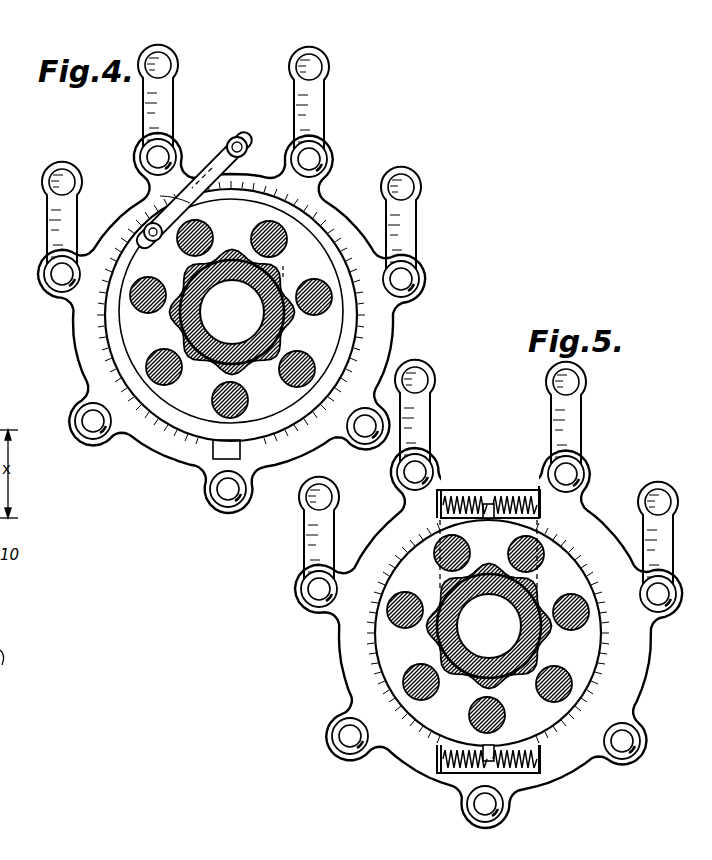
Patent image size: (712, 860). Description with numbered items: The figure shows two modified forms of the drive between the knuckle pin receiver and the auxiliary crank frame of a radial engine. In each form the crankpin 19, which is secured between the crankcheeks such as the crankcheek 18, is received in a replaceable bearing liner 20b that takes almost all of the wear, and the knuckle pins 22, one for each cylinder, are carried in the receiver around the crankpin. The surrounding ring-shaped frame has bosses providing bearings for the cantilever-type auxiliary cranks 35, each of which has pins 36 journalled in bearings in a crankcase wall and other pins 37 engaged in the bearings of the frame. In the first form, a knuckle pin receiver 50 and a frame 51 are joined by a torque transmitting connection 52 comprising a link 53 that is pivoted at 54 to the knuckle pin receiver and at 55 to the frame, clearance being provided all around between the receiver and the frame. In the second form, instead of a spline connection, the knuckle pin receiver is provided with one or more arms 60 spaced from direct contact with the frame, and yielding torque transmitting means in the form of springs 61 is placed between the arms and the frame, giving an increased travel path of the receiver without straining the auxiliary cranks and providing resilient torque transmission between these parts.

In FIG. 4, the crankcheek 18 is at (283, 269).
In FIG. 4, the crankpin 19 is at (225, 279).
In FIG. 5, the crankpin 19 is at (489, 594).
In FIG. 4, the bearing liner 20b is at (229, 355).
In FIG. 5, the bearing liner 20b is at (486, 681).
In FIG. 4, the knuckle pin 22 is at (152, 307).
In FIG. 5, the knuckle pin 22 is at (405, 605).
In FIG. 4, the auxiliary crank 35 is at (326, 117).
In FIG. 5, the auxiliary crank 35 is at (582, 436).
In FIG. 4, the pin 36 is at (325, 70).
In FIG. 5, the pin 36 is at (580, 387).
In FIG. 4, the pin 37 is at (318, 160).
In FIG. 5, the pin 37 is at (580, 478).
In FIG. 4, the knuckle pin receiver 50 is at (344, 302).
In FIG. 4, the frame 51 is at (338, 208).
In FIG. 4, the torque transmitting connection 52 is at (207, 164).
In FIG. 4, the link 53 is at (185, 200).
In FIG. 4, the pivot 54 is at (156, 240).
In FIG. 4, the pivot 55 is at (241, 144).
In FIG. 5, the arm 60 is at (489, 514).
In FIG. 5, the spring 61 is at (525, 492).